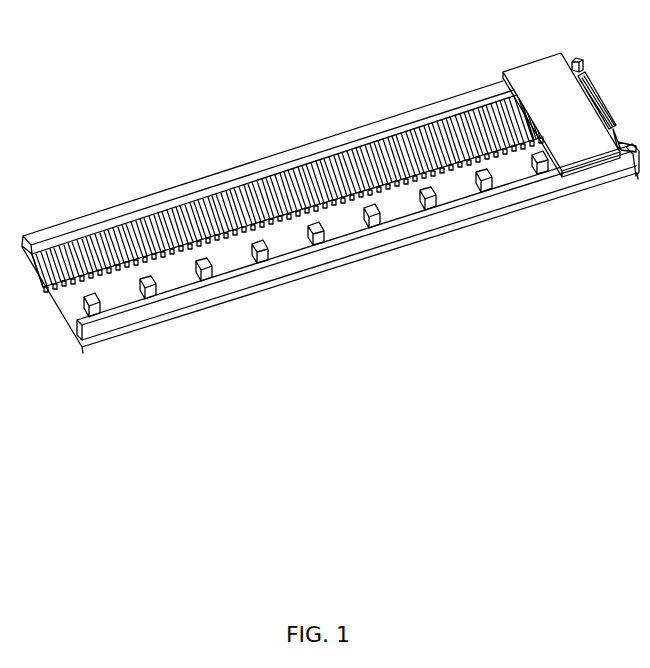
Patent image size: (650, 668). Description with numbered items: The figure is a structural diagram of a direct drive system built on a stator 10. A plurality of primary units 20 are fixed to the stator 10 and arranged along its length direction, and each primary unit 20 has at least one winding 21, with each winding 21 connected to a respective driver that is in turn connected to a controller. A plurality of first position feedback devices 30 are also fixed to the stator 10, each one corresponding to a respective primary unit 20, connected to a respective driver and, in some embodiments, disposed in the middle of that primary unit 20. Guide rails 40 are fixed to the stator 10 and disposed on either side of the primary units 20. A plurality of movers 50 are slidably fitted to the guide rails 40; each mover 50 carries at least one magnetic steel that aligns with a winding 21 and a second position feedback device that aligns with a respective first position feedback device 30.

The stator 10 is at (518, 212).
The primary units 20 is at (508, 113).
The winding 21 is at (430, 117).
The first position feedback devices 30 is at (428, 206).
The guide rails 40 is at (330, 132).
The movers 50 is at (519, 69).